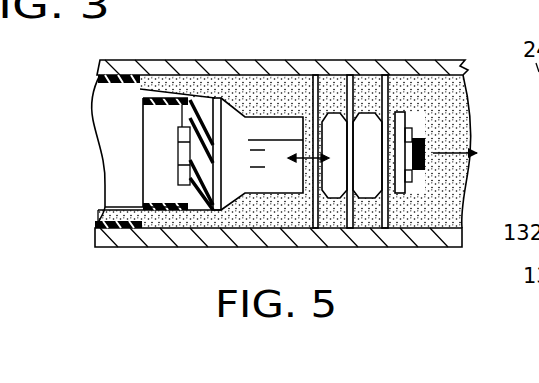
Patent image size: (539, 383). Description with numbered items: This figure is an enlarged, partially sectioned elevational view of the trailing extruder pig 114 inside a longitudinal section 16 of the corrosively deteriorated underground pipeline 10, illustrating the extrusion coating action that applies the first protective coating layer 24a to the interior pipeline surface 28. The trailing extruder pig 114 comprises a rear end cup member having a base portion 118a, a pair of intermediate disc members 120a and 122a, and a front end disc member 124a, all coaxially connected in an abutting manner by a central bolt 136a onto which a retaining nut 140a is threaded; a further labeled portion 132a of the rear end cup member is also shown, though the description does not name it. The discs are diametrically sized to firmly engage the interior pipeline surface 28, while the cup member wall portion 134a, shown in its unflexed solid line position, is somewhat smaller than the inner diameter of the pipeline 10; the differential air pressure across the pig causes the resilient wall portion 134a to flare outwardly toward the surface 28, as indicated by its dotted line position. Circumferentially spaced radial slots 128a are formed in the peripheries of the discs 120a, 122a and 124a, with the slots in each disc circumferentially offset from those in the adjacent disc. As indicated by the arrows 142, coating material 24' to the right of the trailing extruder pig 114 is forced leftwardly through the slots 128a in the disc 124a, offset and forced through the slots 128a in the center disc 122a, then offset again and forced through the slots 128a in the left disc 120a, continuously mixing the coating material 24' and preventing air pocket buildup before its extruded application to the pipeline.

The pipeline 10 is at (264, 48).
The longitudinal section 16 is at (452, 60).
The coating material 24' is at (312, 138).
The first protective coating layer 24a is at (104, 118).
The interior pipeline surface 28 is at (190, 75).
The trailing extruder pig 114 is at (395, 213).
The base portion 118a is at (288, 143).
The intermediate disc member 120a is at (311, 80).
The intermediate disc member 122a is at (375, 128).
The front end disc member 124a is at (386, 78).
The radial slots 128a is at (367, 111).
The solenoid housing 132a is at (150, 164).
The cup member wall portion 134a is at (152, 232).
The central bolt 136a is at (208, 196).
The retaining nut 140a is at (414, 133).
The arrows 142 is at (262, 195).